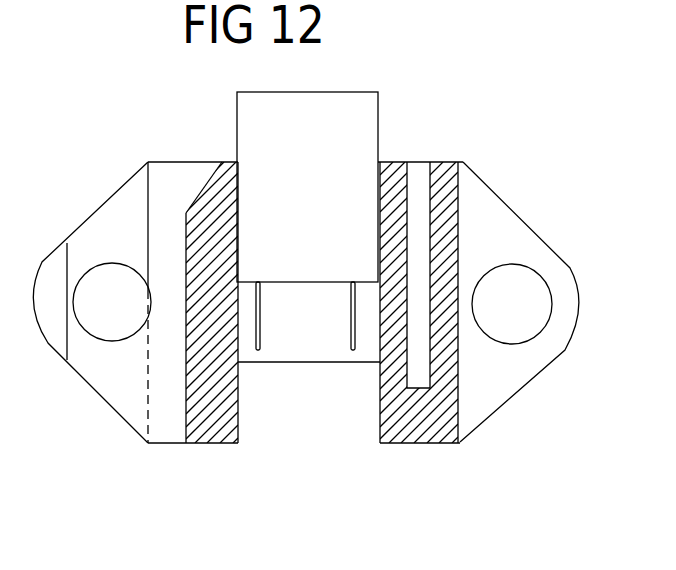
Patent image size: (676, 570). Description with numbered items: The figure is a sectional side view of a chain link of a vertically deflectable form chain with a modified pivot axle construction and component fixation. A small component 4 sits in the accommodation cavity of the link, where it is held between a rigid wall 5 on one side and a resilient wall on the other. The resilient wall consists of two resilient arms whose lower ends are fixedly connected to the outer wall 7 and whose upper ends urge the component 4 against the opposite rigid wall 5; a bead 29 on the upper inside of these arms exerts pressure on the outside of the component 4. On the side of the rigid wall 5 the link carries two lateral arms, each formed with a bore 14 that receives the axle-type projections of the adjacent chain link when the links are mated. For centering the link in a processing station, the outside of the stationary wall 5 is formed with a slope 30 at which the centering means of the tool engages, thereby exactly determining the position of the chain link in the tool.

The small component 4 is at (375, 120).
The rigid wall 5 is at (245, 246).
The outer wall 7 is at (458, 225).
The bore 14 is at (102, 280).
The bead 29 is at (382, 186).
The slope 30 is at (205, 185).